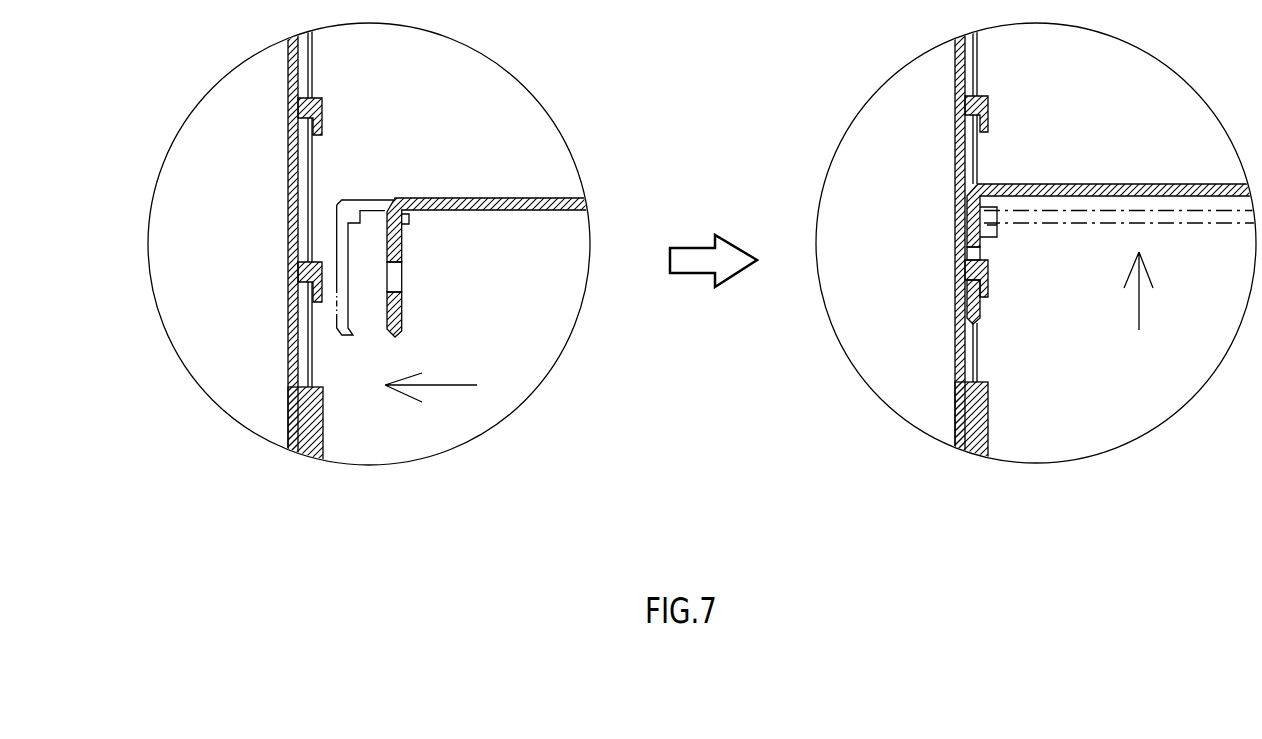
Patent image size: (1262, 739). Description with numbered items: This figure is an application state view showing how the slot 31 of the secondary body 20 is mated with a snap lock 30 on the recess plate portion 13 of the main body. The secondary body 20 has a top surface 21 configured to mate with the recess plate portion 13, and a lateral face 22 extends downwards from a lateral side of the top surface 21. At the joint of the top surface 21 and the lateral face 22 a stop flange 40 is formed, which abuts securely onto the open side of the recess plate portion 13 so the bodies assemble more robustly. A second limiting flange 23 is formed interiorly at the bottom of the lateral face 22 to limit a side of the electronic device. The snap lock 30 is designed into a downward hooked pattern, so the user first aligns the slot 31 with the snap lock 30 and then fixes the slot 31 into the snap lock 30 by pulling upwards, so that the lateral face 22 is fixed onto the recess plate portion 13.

The recess plate portion 13 is at (288, 160).
The secondary body 20 is at (798, 229).
The top surface 21 is at (553, 198).
The lateral face 22 is at (393, 332).
The second limiting flange 23 is at (403, 327).
The snap lock 30 is at (322, 108).
The slot 31 is at (402, 292).
The stop flange 40 is at (405, 220).